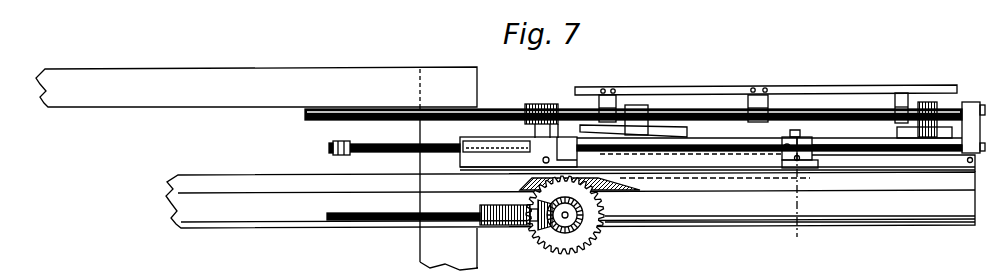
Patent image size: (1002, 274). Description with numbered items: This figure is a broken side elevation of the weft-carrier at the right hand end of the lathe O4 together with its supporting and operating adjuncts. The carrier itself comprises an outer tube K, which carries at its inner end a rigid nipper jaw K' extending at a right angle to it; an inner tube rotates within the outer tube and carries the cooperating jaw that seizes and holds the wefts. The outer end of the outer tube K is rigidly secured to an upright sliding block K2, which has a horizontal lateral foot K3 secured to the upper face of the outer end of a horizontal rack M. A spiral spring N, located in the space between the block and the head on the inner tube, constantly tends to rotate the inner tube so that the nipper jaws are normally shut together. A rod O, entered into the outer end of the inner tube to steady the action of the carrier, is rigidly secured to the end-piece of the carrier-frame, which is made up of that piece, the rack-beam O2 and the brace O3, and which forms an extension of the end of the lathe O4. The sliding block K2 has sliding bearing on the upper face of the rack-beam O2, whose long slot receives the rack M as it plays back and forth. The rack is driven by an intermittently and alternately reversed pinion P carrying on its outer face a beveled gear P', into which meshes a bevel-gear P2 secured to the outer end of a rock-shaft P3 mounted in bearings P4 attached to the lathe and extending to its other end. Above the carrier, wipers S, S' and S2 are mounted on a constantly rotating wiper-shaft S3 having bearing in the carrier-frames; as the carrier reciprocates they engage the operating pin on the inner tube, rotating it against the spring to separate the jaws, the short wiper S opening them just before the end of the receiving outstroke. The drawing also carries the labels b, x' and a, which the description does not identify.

The lathe O4 is at (150, 244).
The wiper-shaft S3 is at (710, 107).
The wiper S' is at (766, 93).
The wiper S2 is at (657, 125).
The short wiper S is at (951, 112).
The plate b is at (934, 130).
The rack M is at (528, 152).
The tube K is at (647, 139).
The rigid nipper jaw K' is at (323, 146).
The rod tip x' is at (315, 153).
The rod O is at (868, 140).
The brace O3 is at (815, 222).
The rack-beam O2 is at (717, 180).
The sliding block K2 is at (797, 158).
The spiral spring N is at (797, 127).
The horizontal lateral foot K3 is at (814, 152).
The axis line a is at (796, 196).
The pinion P is at (573, 215).
The beveled gear P' is at (565, 235).
The bevel-gear P2 is at (536, 229).
The bearings P4 is at (500, 212).
The rock-shaft P3 is at (366, 213).